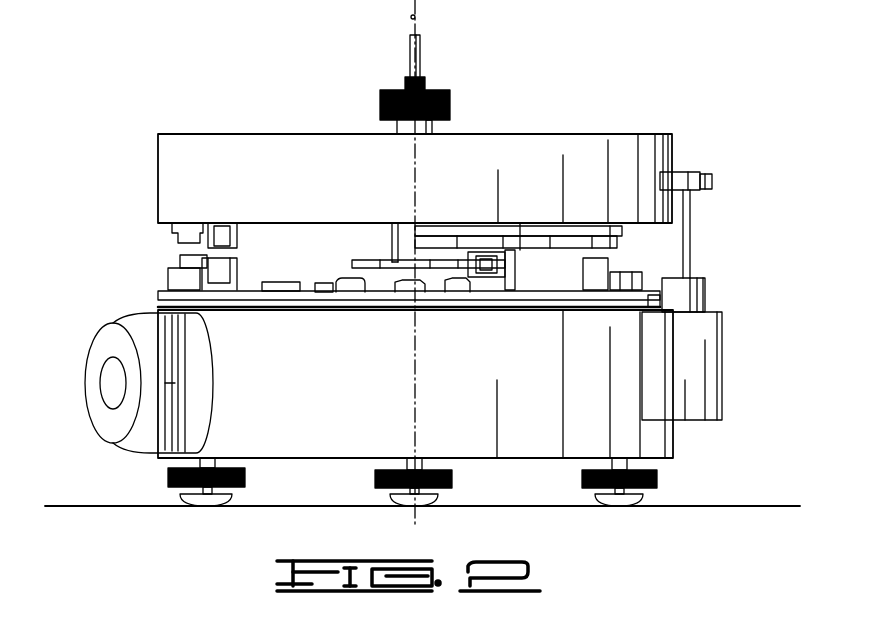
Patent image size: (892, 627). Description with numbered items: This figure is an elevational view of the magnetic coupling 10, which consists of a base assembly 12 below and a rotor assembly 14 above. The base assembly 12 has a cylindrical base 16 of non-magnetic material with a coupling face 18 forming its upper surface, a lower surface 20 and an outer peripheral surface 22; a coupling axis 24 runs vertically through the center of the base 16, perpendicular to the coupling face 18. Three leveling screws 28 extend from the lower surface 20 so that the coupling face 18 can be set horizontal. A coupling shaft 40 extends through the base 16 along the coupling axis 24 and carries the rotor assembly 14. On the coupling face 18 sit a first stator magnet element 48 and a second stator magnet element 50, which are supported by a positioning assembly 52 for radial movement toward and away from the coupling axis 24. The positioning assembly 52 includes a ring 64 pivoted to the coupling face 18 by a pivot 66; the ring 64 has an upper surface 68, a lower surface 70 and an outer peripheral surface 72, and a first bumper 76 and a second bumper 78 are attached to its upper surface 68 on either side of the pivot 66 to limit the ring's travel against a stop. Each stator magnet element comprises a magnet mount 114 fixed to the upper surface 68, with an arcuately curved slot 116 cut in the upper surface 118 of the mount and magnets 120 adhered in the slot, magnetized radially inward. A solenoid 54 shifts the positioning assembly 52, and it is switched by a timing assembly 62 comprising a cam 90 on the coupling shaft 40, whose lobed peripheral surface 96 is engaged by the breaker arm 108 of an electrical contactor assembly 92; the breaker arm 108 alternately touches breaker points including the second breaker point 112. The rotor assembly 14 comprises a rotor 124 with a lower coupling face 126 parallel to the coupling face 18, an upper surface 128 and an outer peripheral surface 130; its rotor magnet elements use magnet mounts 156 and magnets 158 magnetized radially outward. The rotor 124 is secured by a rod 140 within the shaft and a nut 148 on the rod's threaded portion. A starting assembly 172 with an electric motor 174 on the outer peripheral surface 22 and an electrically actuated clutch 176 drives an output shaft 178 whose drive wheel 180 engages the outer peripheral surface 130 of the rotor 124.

The magnetic coupling 10 is at (582, 54).
The base assembly 12 is at (648, 442).
The rotor assembly 14 is at (596, 142).
The cylindrical base 16 is at (515, 440).
The coupling face 18 is at (286, 292).
The lower surface 20 is at (466, 458).
The outer peripheral surface 22 is at (458, 379).
The coupling axis 24 is at (418, 18).
The leveling screws 28 is at (168, 476).
The coupling shaft 40 is at (434, 130).
The first stator magnet element 48 is at (168, 278).
The second stator magnet element 50 is at (648, 272).
The positioning assembly 52 is at (158, 296).
The solenoid 54 is at (92, 408).
The timing assembly 62 is at (517, 272).
The ring 64 is at (655, 307).
The pivot 66 is at (400, 295).
The upper surface 68 is at (542, 294).
The lower surface 70 is at (577, 295).
The outer peripheral surface 72 is at (600, 298).
The first bumper 76 is at (348, 294).
The second bumper 78 is at (457, 294).
The cam 90 is at (365, 260).
The electrical contactor assembly 92 is at (512, 292).
The peripheral surface 96 is at (394, 250).
The breaker arm 108 is at (480, 252).
The second breaker point 112 is at (520, 223).
The magnet mount 114 is at (192, 282).
The arcuately curved slot 116 is at (230, 272).
The upper surface 118 is at (180, 260).
The magnets 120 is at (224, 268).
The rotor 124 is at (542, 150).
The coupling face 126 is at (677, 232).
The upper surface 128 is at (578, 150).
The outer peripheral surface 130 is at (484, 166).
The rod 140 is at (405, 83).
The nut 148 is at (450, 104).
The magnet mounts 156 is at (186, 223).
The magnets 158 is at (222, 223).
The starting assembly 172 is at (722, 382).
The electric motor 174 is at (708, 406).
The electrically actuated clutch 176 is at (705, 291).
The output shaft 178 is at (688, 201).
The drive wheel 180 is at (696, 172).